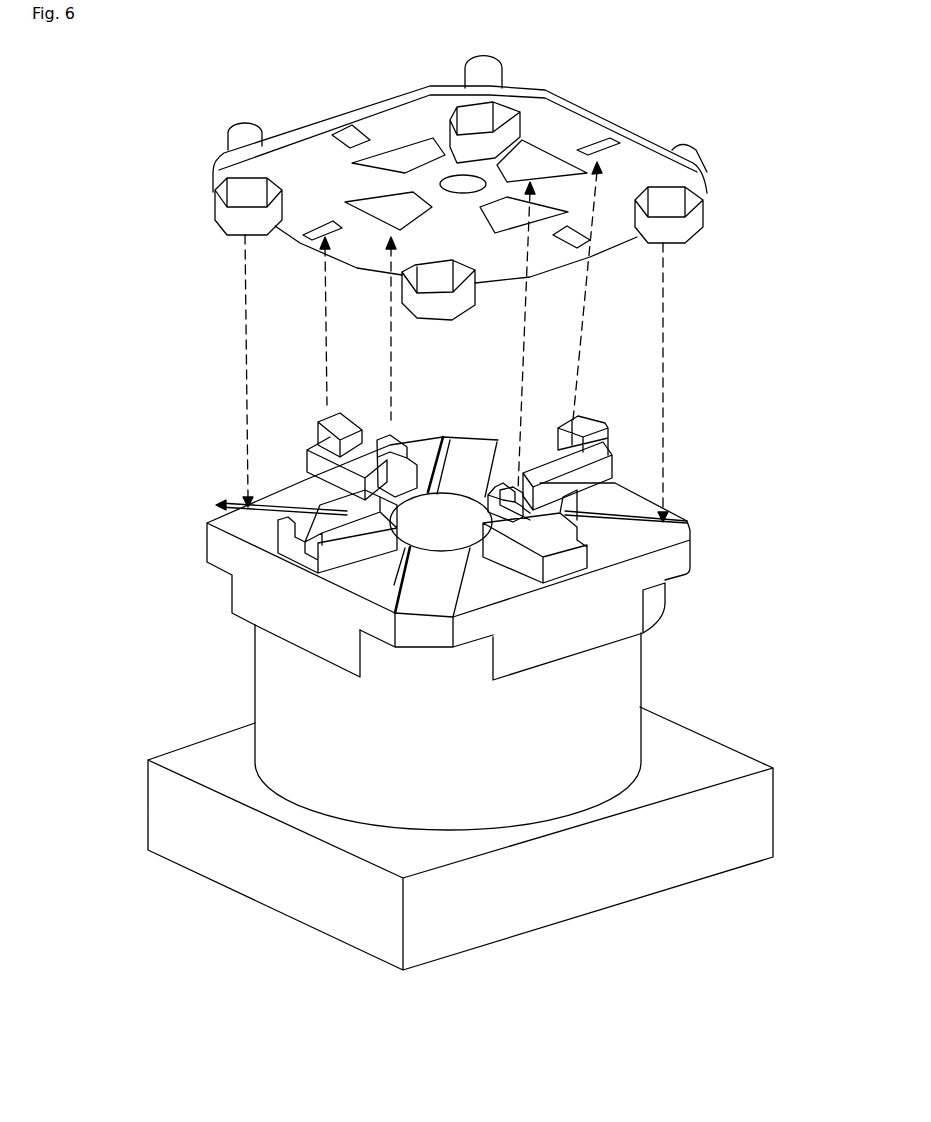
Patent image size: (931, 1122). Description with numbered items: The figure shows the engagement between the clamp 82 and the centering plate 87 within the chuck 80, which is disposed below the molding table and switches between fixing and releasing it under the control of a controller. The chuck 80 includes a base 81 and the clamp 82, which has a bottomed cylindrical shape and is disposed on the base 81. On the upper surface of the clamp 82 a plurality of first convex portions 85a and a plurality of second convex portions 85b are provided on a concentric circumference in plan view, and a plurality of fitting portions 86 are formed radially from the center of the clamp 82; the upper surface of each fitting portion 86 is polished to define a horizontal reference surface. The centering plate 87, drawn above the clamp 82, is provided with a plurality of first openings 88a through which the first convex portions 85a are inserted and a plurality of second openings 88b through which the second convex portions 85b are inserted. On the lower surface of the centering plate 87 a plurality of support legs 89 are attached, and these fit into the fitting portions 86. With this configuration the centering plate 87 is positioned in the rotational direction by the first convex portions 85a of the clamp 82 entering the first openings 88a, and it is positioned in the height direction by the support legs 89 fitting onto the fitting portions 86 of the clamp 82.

The chuck 80 is at (838, 50).
The base 81 is at (773, 828).
The clamp 82 is at (640, 678).
The first convex portion 85a is at (334, 422).
The second convex portion 85b is at (398, 445).
The fitting portion 86 is at (223, 503).
The centering plate 87 is at (703, 165).
The first opening 88a is at (333, 238).
The second opening 88b is at (545, 165).
The support leg 89 is at (222, 205).